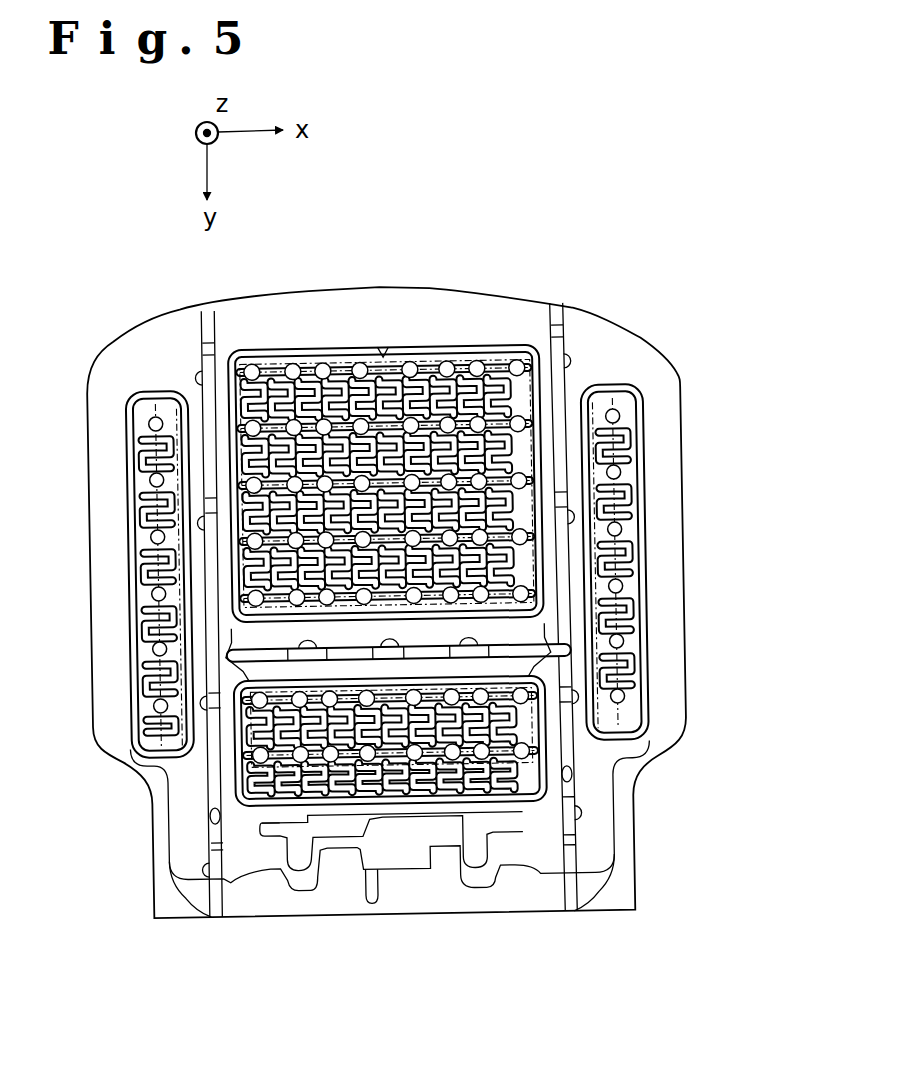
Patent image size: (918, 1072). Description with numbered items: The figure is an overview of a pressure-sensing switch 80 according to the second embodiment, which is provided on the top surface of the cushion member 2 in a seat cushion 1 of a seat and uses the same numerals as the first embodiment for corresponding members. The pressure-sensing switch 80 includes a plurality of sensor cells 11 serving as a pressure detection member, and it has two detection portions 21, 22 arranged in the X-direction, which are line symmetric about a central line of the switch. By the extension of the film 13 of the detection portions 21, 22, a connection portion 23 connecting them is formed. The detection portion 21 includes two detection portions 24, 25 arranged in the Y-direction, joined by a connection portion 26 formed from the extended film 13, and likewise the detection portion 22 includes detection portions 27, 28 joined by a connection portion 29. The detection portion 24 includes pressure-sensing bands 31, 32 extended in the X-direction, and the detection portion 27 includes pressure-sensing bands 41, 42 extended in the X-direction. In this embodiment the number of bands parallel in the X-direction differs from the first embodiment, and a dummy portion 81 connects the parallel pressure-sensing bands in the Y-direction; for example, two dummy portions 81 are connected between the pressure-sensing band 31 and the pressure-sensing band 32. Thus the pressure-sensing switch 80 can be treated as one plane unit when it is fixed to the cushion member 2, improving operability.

The seat cushion 1 is at (386, 587).
The cushion member 2 is at (668, 376).
The sensor cell 11 is at (458, 762).
The film 13 is at (297, 810).
The detection portion 21 is at (242, 337).
The detection portion 22 is at (530, 322).
The connection portion 23 is at (410, 362).
The detection portion 24 is at (198, 396).
The detection portion 25 is at (224, 811).
The connection portion 26 is at (225, 662).
The detection portion 27 is at (563, 447).
The detection portion 28 is at (570, 774).
The connection portion 29 is at (583, 652).
The pressure-sensing band 31 is at (308, 366).
The pressure-sensing band 32 is at (293, 440).
The pressure-sensing band 41 is at (467, 362).
The pressure-sensing band 42 is at (497, 452).
The pressure-sensing switch 80 is at (384, 338).
The dummy portion 81 is at (262, 365).